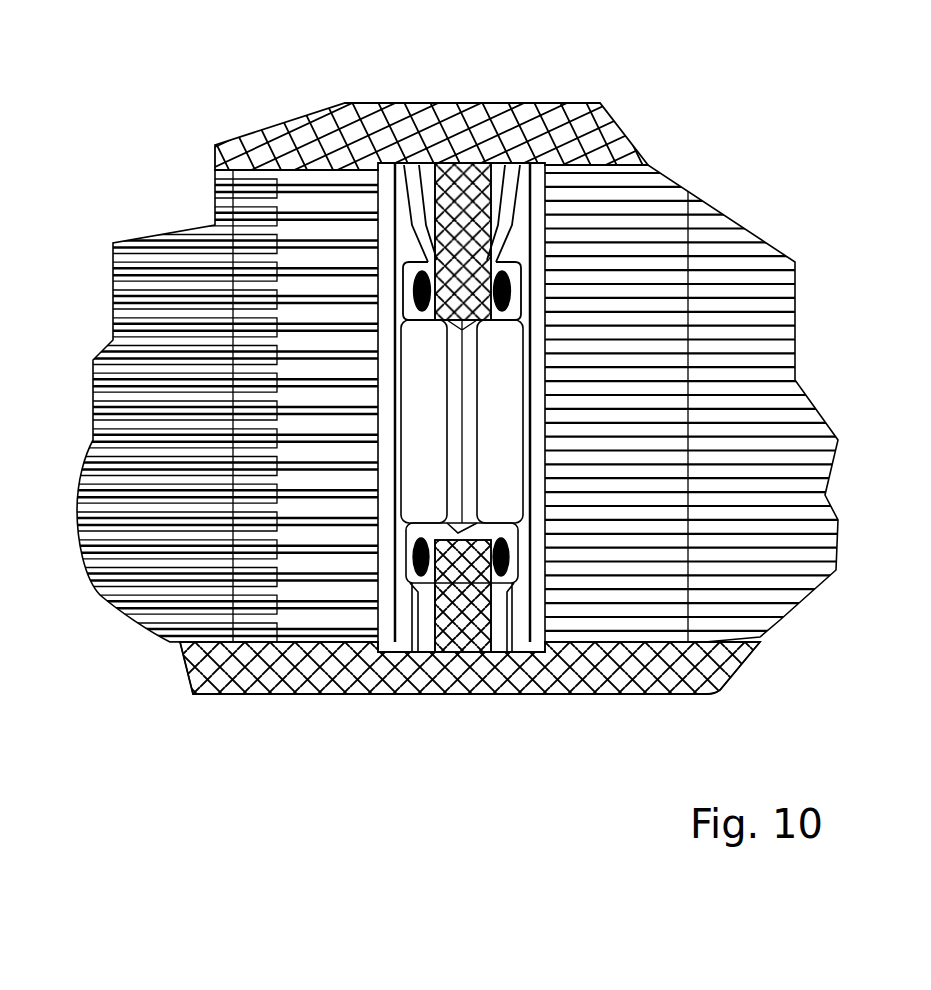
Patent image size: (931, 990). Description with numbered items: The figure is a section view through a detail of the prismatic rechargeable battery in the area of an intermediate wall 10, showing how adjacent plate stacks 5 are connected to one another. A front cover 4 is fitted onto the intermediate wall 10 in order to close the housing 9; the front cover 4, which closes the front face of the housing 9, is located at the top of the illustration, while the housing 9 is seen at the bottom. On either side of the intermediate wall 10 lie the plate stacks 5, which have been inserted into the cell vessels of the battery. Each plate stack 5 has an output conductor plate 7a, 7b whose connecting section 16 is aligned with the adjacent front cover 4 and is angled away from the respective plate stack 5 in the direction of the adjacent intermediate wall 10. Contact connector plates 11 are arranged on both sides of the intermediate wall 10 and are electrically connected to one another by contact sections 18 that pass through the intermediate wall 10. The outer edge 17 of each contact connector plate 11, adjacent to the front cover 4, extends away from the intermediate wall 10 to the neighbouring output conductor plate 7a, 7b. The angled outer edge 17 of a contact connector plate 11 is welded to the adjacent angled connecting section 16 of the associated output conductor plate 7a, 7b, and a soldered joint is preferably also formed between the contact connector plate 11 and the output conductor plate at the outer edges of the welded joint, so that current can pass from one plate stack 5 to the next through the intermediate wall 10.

The front cover 4 is at (607, 122).
The plate stack 5 is at (112, 343).
The output conductor plate 7a is at (384, 618).
The output conductor plate 7b is at (540, 620).
The housing 9 is at (298, 697).
The intermediate wall 10 is at (455, 188).
The contact connector plate 11 is at (514, 623).
The connecting section 16 is at (398, 190).
The outer edge 17 is at (429, 218).
The contact section 18 is at (438, 442).